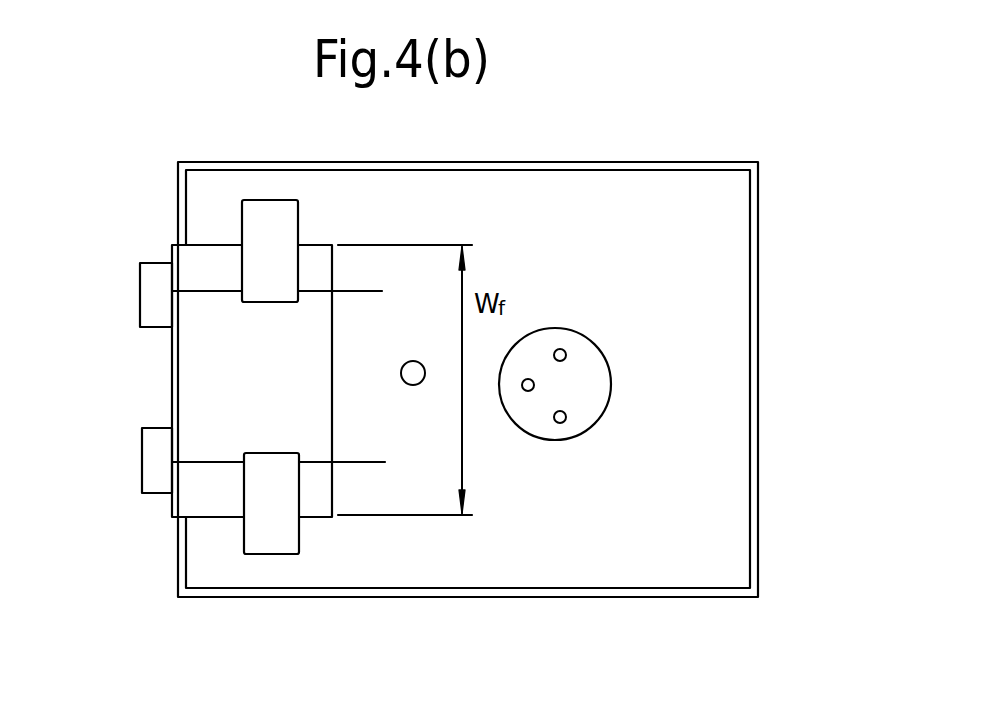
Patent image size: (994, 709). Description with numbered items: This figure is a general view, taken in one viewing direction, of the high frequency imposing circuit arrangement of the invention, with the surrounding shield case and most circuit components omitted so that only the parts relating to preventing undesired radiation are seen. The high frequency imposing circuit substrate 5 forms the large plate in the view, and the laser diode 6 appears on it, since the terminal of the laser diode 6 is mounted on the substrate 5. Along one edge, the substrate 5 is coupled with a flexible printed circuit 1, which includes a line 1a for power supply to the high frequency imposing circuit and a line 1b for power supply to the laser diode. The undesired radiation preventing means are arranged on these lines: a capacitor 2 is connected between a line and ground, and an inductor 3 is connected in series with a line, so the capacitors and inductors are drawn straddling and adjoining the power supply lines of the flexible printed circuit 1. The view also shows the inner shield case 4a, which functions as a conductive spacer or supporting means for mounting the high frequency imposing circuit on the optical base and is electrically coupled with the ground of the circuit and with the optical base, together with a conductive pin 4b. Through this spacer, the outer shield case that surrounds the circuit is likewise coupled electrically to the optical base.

The flexible printed circuit 1 is at (200, 382).
The line for power supply to the high frequency imposing circuit 1a is at (375, 291).
The line for power supply to the laser diode 1b is at (355, 466).
The capacitor 2 is at (285, 222).
The inductor 3 is at (148, 287).
The inner shield case 4a is at (755, 328).
The conductive pin 4b is at (416, 380).
The high frequency imposing circuit substrate 5 is at (695, 212).
The laser diode 6 is at (590, 408).